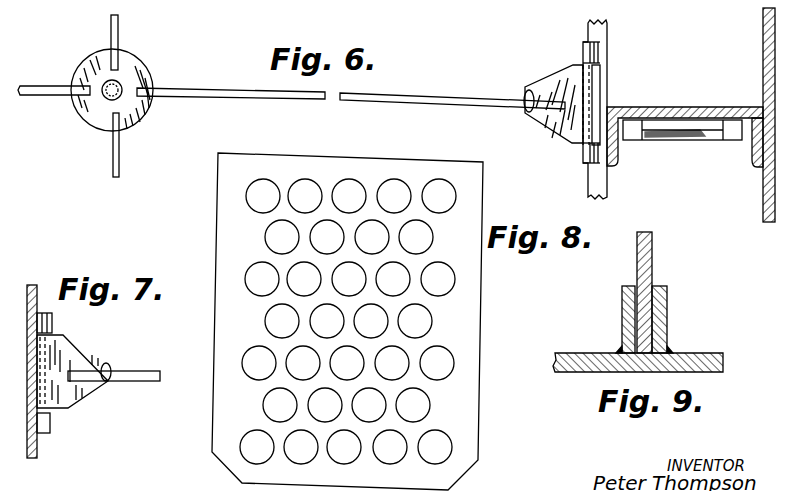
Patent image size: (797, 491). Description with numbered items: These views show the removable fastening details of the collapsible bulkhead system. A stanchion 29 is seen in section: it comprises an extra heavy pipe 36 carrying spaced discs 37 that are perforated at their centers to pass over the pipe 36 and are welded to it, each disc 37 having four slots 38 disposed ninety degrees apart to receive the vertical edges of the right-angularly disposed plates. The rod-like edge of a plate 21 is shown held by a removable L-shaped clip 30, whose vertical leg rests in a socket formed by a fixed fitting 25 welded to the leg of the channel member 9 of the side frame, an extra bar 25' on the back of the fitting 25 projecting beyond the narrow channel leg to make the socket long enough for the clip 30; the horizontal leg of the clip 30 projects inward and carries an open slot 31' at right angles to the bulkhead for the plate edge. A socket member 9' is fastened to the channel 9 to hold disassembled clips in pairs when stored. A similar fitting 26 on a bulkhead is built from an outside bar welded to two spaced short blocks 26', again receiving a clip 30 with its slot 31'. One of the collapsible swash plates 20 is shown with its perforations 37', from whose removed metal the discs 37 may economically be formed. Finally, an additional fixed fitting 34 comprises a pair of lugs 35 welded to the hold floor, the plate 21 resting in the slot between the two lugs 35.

In FIG. 6, the channel member 9 is at (691, 115).
In FIG. 6, the socket member 9' is at (682, 146).
In FIG. 8, the collapsible bulkhead or swash plate 20 is at (468, 426).
In FIG. 6, the collapsible bulkhead or swash plate 21 is at (434, 104).
In FIG. 7, the collapsible bulkhead or swash plate 21 is at (114, 376).
In FIG. 9, the collapsible bulkhead or swash plate 21 is at (652, 246).
In FIG. 6, the fixed fitting 25 is at (578, 109).
In FIG. 6, the extra bar 25' is at (614, 99).
In FIG. 7, the fixed fitting 26 is at (69, 429).
In FIG. 7, the short block 26' is at (55, 373).
In FIG. 6, the stanchion 29 is at (76, 60).
In FIG. 6, the removable clip or L member 30 is at (545, 128).
In FIG. 7, the removable clip or L member 30 is at (90, 395).
In FIG. 6, the open slot 31' is at (516, 91).
In FIG. 7, the open slot 31' is at (125, 361).
In FIG. 9, the fixed fitting 34 is at (670, 334).
In FIG. 9, the lug or plate member 35 is at (622, 316).
In FIG. 6, the pipe 36 is at (116, 83).
In FIG. 6, the disc or flange 37 is at (129, 87).
In FIG. 8, the perforation 37' is at (339, 321).
In FIG. 6, the slot 38 is at (140, 118).